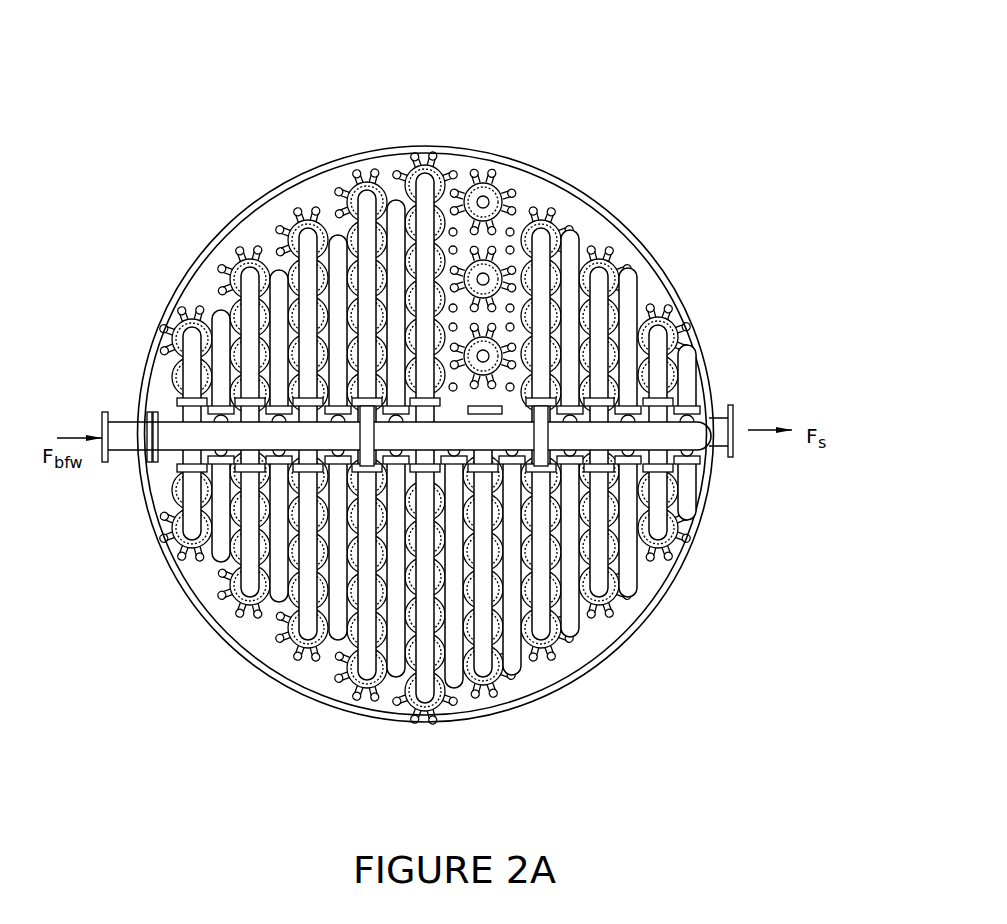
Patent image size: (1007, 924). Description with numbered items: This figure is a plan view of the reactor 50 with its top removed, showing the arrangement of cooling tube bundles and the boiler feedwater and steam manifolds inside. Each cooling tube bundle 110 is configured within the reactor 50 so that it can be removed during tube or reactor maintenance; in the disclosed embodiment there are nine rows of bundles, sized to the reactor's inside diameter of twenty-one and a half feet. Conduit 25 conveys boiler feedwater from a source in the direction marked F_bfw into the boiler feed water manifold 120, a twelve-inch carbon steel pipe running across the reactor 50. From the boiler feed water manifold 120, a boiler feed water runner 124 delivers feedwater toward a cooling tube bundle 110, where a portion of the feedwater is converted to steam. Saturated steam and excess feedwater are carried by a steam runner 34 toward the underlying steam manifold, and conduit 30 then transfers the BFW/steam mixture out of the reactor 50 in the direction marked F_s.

The conduit 25 is at (169, 293).
The conduit 30 is at (784, 463).
The steam runner 34 is at (439, 383).
The reactor 50 is at (499, 434).
The cooling tube bundle 110 is at (438, 437).
The boiler feed water manifold 120 is at (484, 501).
The boiler feed water runner 124 is at (482, 217).